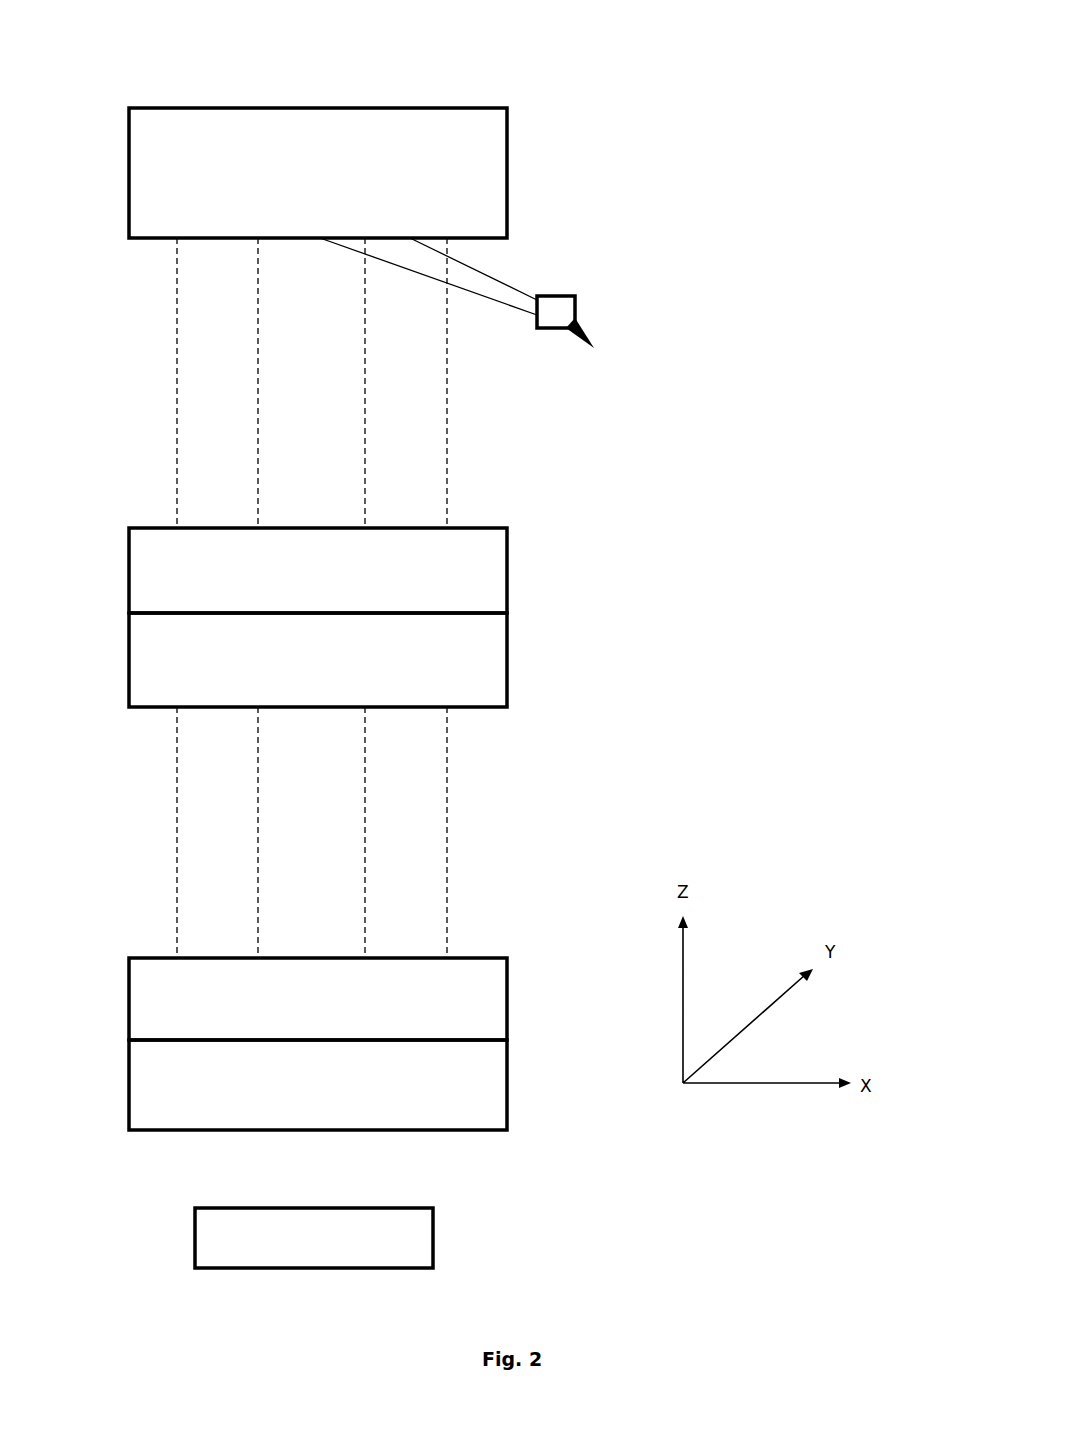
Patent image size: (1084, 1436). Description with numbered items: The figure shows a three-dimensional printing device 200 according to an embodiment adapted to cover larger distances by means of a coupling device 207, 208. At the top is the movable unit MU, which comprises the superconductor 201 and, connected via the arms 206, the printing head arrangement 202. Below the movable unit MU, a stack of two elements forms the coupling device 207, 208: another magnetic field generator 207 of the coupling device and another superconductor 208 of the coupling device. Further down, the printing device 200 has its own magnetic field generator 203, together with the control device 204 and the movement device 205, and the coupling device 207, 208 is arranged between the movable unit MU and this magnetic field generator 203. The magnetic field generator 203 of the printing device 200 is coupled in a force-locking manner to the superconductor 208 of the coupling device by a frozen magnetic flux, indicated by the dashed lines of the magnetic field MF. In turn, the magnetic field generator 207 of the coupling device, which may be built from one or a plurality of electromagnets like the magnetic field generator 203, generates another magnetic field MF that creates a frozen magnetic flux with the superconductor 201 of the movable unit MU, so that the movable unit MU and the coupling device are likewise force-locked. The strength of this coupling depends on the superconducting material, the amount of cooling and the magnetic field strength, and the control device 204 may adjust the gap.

The 3D printing device 200 is at (280, 84).
The superconductor 201 is at (507, 165).
The printing head arrangement 202 is at (575, 305).
The magnetic field generator 203 is at (507, 1028).
The control device 204 is at (433, 1237).
The movement device 205 is at (507, 1105).
The arms 206 is at (510, 284).
The magnetic field generator of the coupling device 207 is at (507, 591).
The superconductor of the coupling device 208 is at (507, 665).
The movable unit MU is at (707, 108).
The magnetic field MF is at (447, 453).